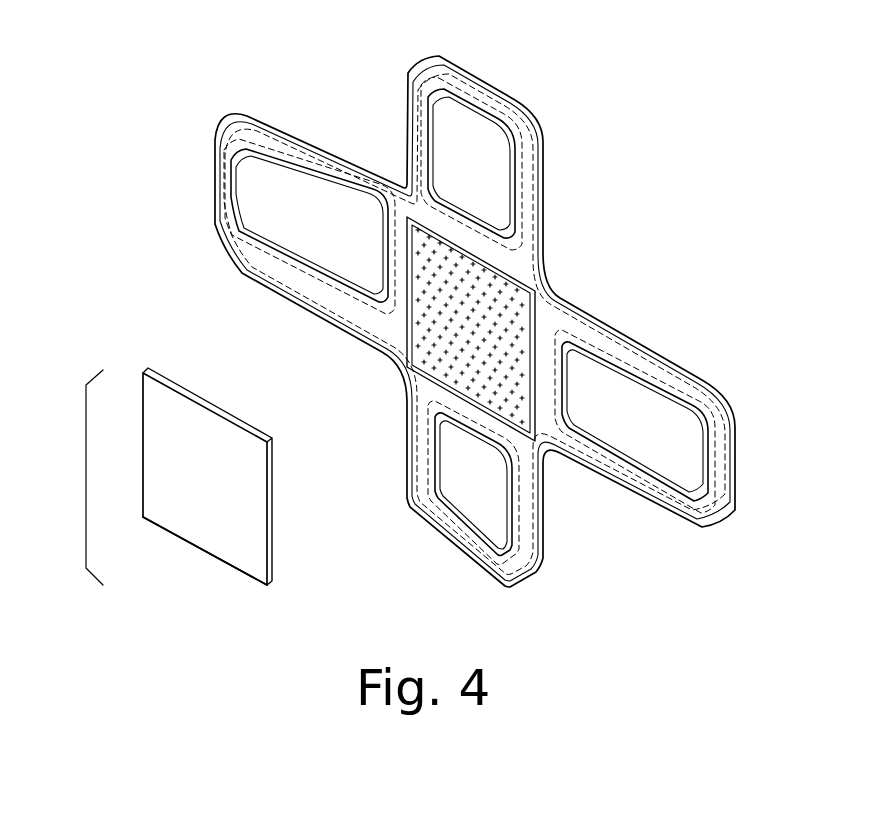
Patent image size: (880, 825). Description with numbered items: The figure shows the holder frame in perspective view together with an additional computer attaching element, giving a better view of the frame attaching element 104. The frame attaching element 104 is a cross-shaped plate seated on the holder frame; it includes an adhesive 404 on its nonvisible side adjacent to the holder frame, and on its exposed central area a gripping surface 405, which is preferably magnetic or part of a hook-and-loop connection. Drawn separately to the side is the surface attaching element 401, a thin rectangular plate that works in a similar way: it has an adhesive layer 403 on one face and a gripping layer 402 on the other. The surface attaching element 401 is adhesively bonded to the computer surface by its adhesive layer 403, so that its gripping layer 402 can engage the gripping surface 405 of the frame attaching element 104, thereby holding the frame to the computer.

The frame attaching element 104 is at (407, 213).
The surface attaching element 401 is at (169, 477).
The gripping layer 402 is at (227, 410).
The adhesive layer 403 is at (227, 555).
The adhesive 404 is at (522, 280).
The gripping surface 405 is at (410, 363).